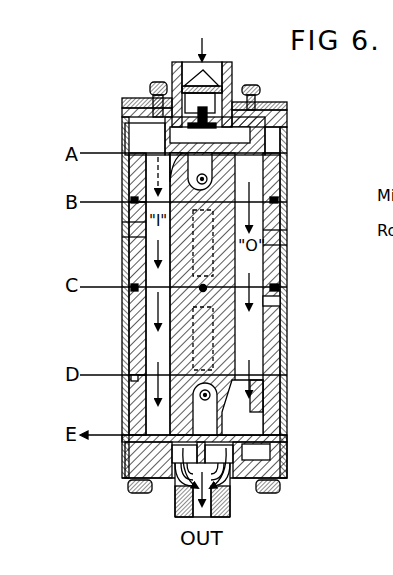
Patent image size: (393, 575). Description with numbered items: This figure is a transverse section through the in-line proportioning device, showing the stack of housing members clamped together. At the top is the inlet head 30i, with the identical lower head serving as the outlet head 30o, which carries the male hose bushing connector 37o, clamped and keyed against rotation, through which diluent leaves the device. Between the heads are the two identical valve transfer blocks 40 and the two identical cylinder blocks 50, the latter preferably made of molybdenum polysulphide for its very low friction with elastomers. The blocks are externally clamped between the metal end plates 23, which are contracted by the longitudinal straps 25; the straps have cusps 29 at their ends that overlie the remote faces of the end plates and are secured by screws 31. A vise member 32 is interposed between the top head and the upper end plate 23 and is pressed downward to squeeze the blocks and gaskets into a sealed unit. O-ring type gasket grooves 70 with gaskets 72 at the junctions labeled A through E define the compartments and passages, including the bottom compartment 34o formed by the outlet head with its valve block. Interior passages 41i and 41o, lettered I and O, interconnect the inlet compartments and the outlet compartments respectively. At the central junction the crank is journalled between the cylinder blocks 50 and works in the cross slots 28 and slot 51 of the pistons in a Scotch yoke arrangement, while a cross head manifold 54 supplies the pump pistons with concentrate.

The end plate 23 is at (288, 103).
The longitudinal strap 25 is at (287, 183).
The cross slot 28 is at (206, 287).
The cusp 29 is at (262, 96).
The inlet head 30i is at (124, 120).
The outlet head 30o is at (125, 463).
The screw 31 is at (272, 100).
The vise member 32 is at (287, 117).
The outlet compartment 34o is at (287, 458).
The male hose bushing connector 37o is at (176, 492).
The valve transfer block 40 is at (130, 177).
The inlet passage 41i is at (132, 228).
The outlet passage 41o is at (287, 243).
The cylinder block 50 is at (134, 249).
The slot 51 is at (168, 290).
The cross head manifold 54 is at (207, 178).
The O-ring type gasket groove 70 is at (287, 204).
The gasket 72 is at (288, 303).